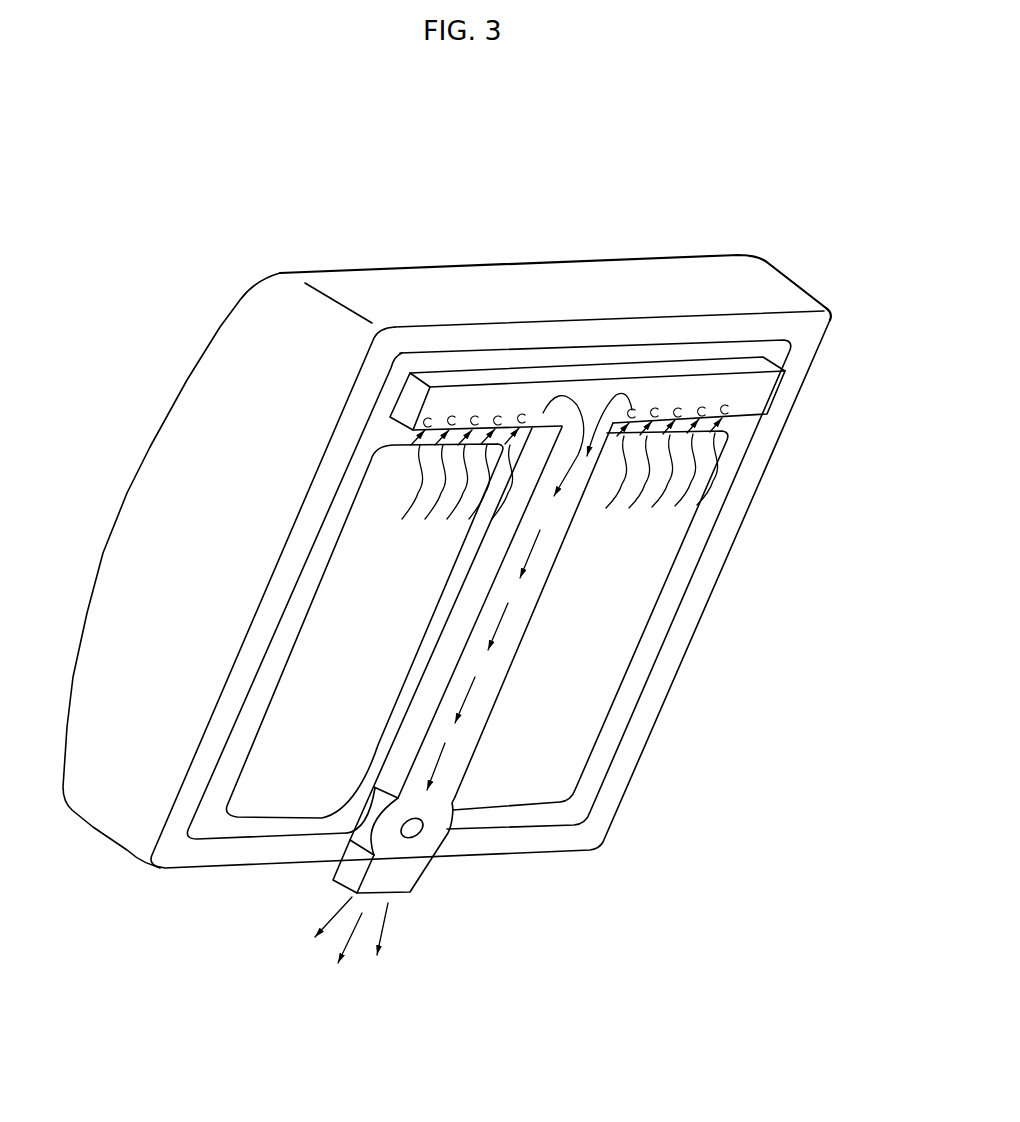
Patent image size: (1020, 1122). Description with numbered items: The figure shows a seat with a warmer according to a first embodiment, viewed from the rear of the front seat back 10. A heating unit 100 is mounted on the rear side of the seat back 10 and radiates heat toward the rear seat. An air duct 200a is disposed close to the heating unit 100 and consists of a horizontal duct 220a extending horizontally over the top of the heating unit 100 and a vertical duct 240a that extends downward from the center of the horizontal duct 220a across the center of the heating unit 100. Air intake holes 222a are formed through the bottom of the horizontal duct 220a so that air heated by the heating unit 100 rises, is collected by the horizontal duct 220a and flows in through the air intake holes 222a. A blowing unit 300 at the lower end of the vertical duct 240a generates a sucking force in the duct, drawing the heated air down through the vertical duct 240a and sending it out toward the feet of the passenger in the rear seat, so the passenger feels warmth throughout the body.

The front seat back 10 is at (488, 257).
The heating unit 100 is at (372, 570).
The air duct 200a is at (640, 345).
The horizontal duct 220a is at (706, 385).
The air intake holes 222a is at (708, 418).
The vertical duct 240a is at (510, 615).
The blowing unit 300 is at (432, 837).